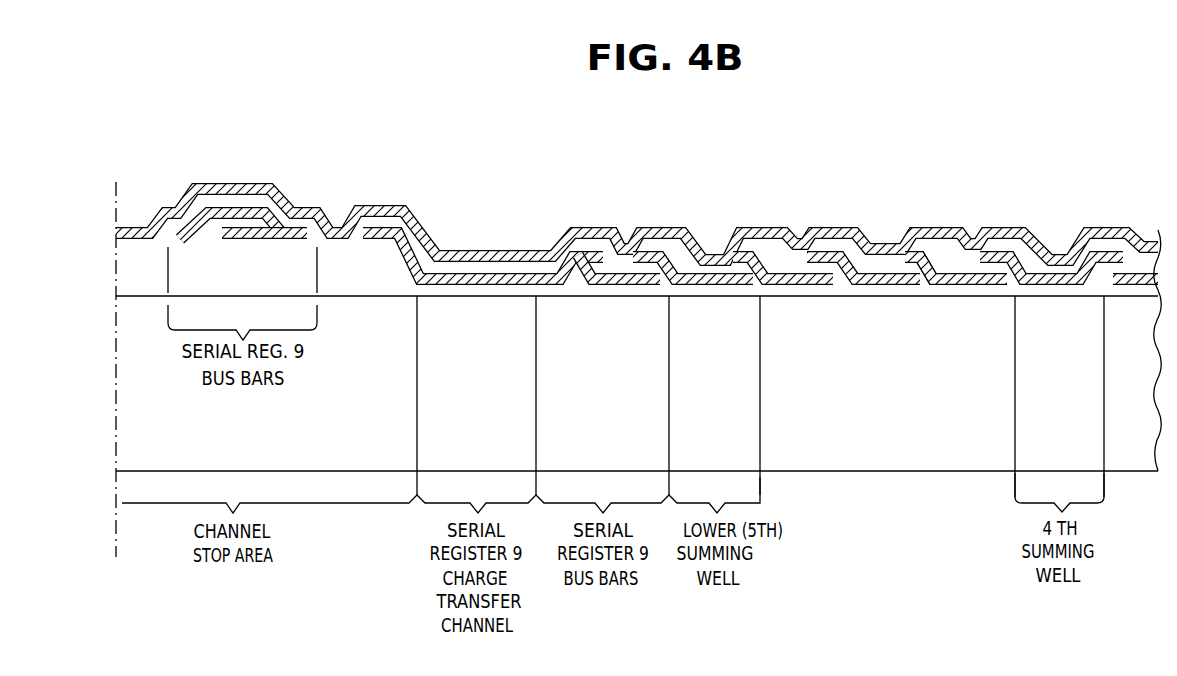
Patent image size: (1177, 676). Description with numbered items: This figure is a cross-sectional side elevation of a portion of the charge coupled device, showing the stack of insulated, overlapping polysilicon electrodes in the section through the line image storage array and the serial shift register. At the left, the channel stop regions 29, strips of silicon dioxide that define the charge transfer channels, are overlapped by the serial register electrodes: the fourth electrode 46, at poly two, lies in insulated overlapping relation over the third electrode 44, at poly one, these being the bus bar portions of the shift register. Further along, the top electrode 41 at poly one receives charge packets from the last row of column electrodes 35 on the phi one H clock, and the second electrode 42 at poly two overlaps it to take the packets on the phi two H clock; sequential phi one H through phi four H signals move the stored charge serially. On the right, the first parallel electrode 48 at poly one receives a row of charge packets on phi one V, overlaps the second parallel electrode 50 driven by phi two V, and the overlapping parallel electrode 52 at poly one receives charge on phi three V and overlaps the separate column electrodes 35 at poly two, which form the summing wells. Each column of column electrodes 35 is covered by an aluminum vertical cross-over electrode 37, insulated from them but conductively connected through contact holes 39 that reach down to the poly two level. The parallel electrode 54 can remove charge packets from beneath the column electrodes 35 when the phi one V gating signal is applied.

The channel stop regions 29 is at (336, 257).
The column electrodes 35 is at (673, 268).
The vertical cross-over electrode 37 is at (1013, 232).
The contact holes 39 is at (716, 245).
The top electrode 41 is at (622, 277).
The second electrode 42 is at (562, 265).
The third electrode 44 is at (278, 226).
The fourth electrode 46 is at (216, 210).
The first parallel electrode 48 is at (965, 273).
The second parallel electrode 50 is at (877, 275).
The overlapping parallel electrode 52 is at (793, 277).
The parallel electrode 54 is at (965, 273).